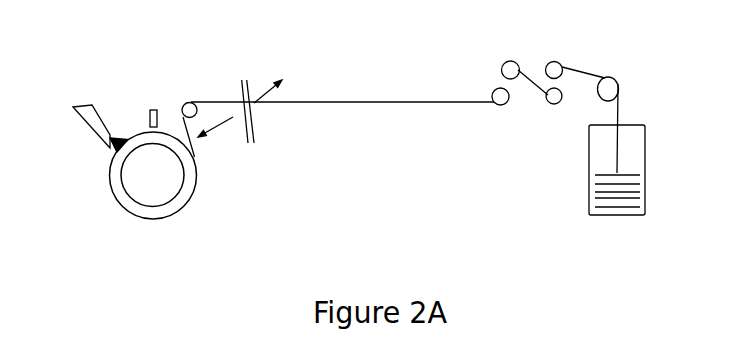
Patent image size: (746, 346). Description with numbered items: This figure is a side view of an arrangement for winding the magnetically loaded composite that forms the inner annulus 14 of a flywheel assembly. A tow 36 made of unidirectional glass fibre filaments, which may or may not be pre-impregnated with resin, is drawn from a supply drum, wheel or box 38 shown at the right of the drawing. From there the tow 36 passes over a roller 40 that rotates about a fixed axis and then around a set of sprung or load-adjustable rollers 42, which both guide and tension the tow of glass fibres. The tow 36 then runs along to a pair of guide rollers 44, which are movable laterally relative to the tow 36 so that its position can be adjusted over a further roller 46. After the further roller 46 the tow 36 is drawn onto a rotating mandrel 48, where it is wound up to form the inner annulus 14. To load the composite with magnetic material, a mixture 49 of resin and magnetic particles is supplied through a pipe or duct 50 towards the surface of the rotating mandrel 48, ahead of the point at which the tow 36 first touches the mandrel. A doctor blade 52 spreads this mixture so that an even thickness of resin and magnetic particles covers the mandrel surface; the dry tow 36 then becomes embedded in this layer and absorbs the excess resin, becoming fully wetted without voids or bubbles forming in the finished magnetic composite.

The inner annulus 14 is at (110, 202).
The rotating mandrel 48 is at (153, 198).
The mixture of resin and magnetic particles 49 is at (109, 147).
The pipe or duct 50 is at (72, 118).
The doctor blade 52 is at (147, 112).
The further roller 46 is at (191, 104).
The pair of guide rollers 44 is at (258, 80).
The set of sprung or load-adjustable rollers 42 is at (562, 63).
The roller 40 is at (617, 78).
The tow 36 is at (622, 113).
The supply drum, wheel or box 38 is at (652, 170).